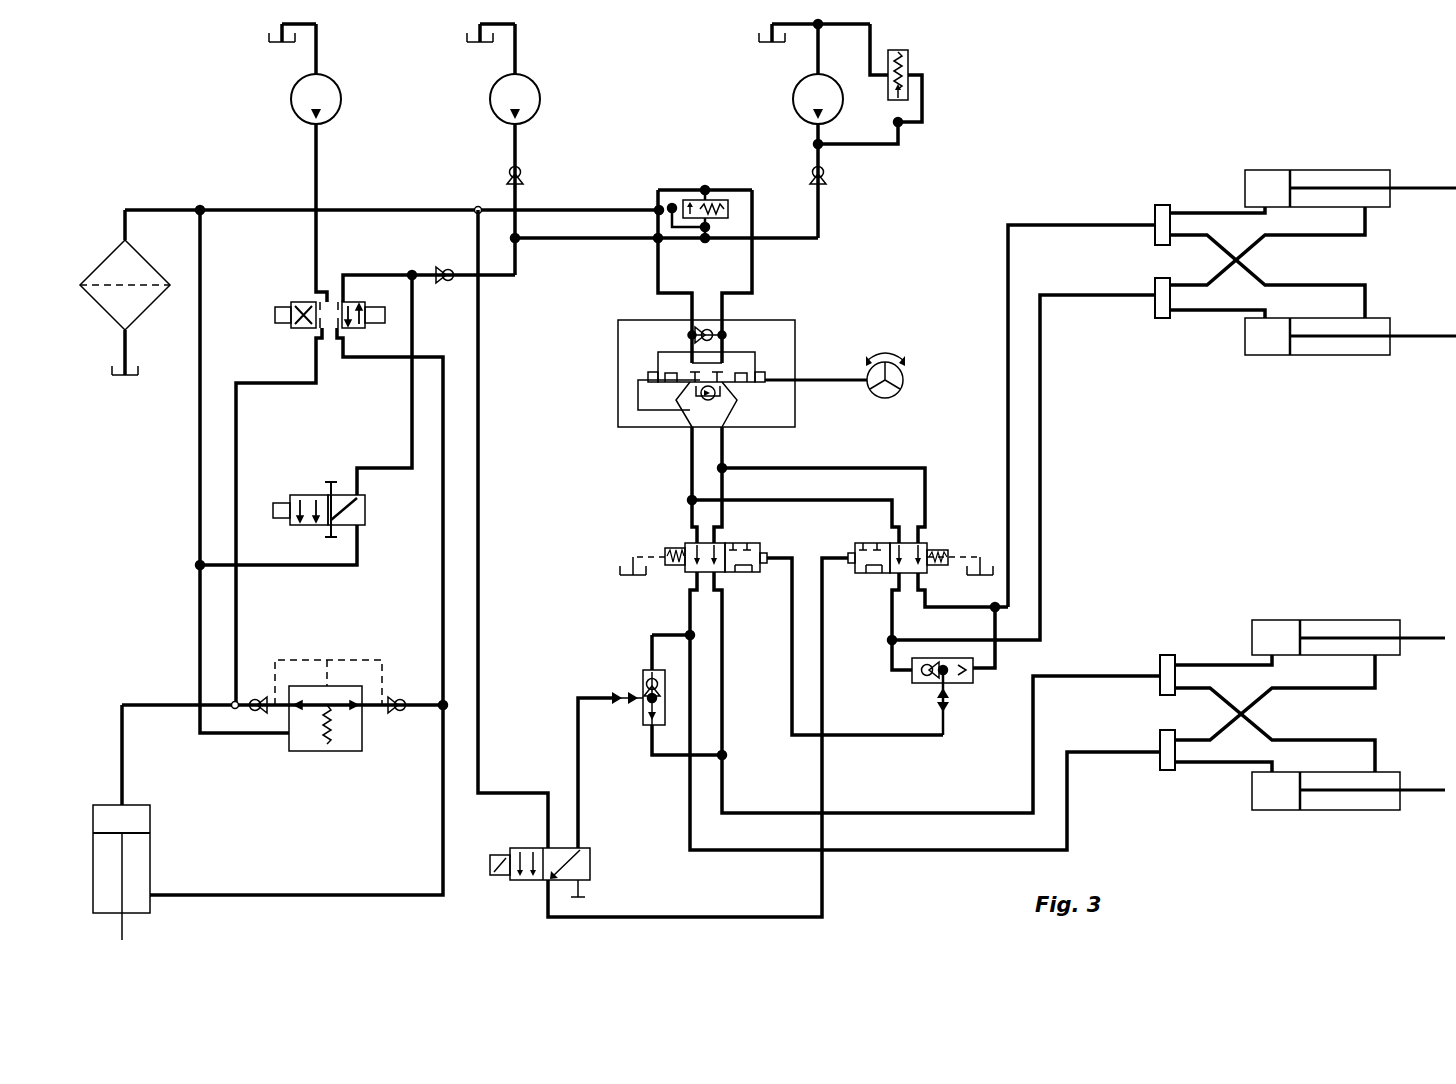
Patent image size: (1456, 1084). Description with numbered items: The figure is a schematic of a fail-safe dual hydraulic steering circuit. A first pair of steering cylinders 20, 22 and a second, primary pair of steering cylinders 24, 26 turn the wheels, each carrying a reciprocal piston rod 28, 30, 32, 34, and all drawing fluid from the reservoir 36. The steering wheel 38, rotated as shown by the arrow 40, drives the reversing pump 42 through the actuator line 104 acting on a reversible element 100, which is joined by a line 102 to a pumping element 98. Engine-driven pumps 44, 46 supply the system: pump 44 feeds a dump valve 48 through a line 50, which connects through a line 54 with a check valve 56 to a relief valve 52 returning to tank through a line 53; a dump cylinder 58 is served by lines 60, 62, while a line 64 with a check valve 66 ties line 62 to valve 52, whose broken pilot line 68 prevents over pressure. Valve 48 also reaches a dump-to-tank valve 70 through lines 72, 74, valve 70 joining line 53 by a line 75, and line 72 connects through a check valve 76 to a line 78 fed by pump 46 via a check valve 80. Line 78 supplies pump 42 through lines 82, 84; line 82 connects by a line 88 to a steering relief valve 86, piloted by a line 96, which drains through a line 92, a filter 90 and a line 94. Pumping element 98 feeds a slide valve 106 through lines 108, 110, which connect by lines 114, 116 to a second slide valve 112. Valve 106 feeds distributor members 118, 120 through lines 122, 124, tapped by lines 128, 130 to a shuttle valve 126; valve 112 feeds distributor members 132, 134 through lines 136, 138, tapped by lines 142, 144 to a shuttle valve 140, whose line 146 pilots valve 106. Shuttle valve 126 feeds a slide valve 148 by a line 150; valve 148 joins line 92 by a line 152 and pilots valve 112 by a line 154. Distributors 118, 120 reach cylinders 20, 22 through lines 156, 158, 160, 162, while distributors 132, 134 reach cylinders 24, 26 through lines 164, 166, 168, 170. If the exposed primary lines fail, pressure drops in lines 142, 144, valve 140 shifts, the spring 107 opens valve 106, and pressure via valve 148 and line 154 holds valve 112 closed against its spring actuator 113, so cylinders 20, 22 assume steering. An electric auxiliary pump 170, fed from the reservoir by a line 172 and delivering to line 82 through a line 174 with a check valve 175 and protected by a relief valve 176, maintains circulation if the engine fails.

The steering cylinder 20 is at (1338, 810).
The steering cylinder 22 is at (1350, 620).
The steering cylinder 24 is at (1328, 356).
The steering cylinder 26 is at (1348, 170).
The piston rod 28 is at (1418, 790).
The piston rod 30 is at (1416, 640).
The piston rod 32 is at (1425, 340).
The piston rod 34 is at (1425, 192).
The reservoir 36 is at (272, 52).
The steering wheel 38 is at (905, 378).
The arrow 40 is at (891, 355).
The pump 42 is at (796, 345).
The pump 44 is at (336, 107).
The pump 46 is at (540, 105).
The slide valve or dump valve 48 is at (300, 330).
The line 50 is at (322, 171).
The relief valve 52 is at (357, 752).
The line 53 is at (198, 480).
The line 54 is at (236, 622).
The check valve 56 is at (257, 712).
The dump cylinder 58 is at (150, 838).
The line 60 is at (164, 702).
The line 62 is at (441, 572).
The line 64 is at (414, 703).
The check valve 66 is at (402, 713).
The internal pilot pressure connection line 68 is at (360, 660).
The dump-to-tank valve 70 is at (362, 512).
The line 72 is at (363, 275).
The line 74 is at (415, 318).
The line 75 is at (298, 566).
The check valve 76 is at (448, 268).
The line 78 is at (518, 264).
The check valve 80 is at (524, 171).
The line 82 is at (618, 242).
The line 84 is at (665, 268).
The steering relief valve 86 is at (712, 200).
The line 88 is at (707, 235).
The filter 90 is at (162, 270).
The line 92 is at (232, 209).
The line 94 is at (130, 340).
The line 96 is at (690, 224).
The pumping element 98 is at (705, 402).
The reversible element 100 is at (680, 348).
The line 102 is at (637, 394).
The line 104 is at (830, 378).
The slide valve 106 is at (738, 543).
The spring 107 is at (669, 548).
The line 108 is at (690, 481).
The line 110 is at (726, 445).
The slide valve 112 is at (870, 575).
The spring actuator 113 is at (935, 547).
The line 114 is at (925, 476).
The line 116 is at (845, 498).
The distributor member 118 is at (1158, 770).
The distributor member 120 is at (1160, 660).
The line 122 is at (688, 812).
The line 124 is at (725, 668).
The shuttle valve 126 is at (640, 684).
The line 128 is at (663, 633).
The line 130 is at (665, 757).
The distributor member 132 is at (1156, 312).
The distributor member 134 is at (1157, 207).
The line 136 is at (1044, 468).
The line 138 is at (1007, 223).
The shuttle valve 140 is at (958, 690).
The line 142 is at (890, 655).
The line 144 is at (996, 656).
The line 146 is at (889, 737).
The slide valve 148 is at (592, 866).
The line 150 is at (575, 722).
The line 152 is at (480, 645).
The line 154 is at (742, 915).
The line 156 is at (1215, 765).
The line 158 is at (1300, 690).
The line 160 is at (1208, 663).
The line 162 is at (1340, 738).
The line 164 is at (1198, 313).
The line 166 is at (1297, 238).
The line 168 is at (1198, 212).
The auxiliary pump 170 is at (795, 105).
The line 172 is at (818, 57).
The line 174 is at (822, 216).
The check valve 175 is at (828, 172).
The relief valve 176 is at (910, 67).